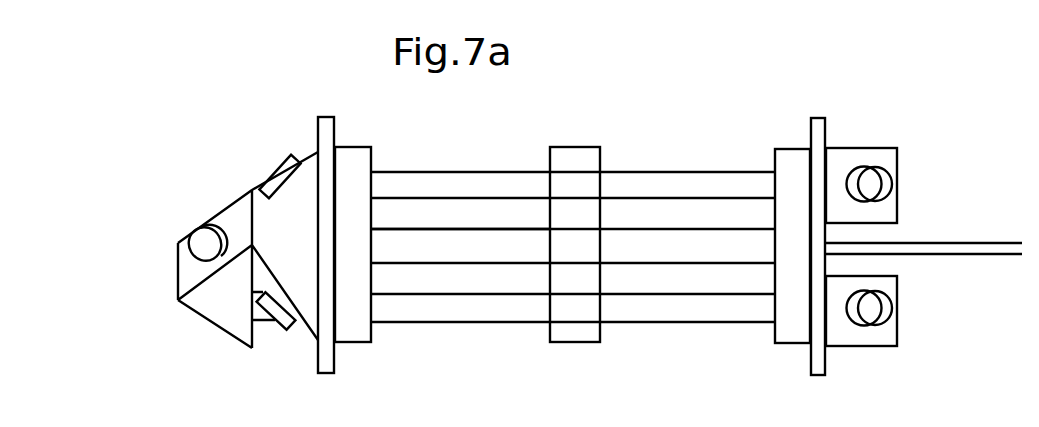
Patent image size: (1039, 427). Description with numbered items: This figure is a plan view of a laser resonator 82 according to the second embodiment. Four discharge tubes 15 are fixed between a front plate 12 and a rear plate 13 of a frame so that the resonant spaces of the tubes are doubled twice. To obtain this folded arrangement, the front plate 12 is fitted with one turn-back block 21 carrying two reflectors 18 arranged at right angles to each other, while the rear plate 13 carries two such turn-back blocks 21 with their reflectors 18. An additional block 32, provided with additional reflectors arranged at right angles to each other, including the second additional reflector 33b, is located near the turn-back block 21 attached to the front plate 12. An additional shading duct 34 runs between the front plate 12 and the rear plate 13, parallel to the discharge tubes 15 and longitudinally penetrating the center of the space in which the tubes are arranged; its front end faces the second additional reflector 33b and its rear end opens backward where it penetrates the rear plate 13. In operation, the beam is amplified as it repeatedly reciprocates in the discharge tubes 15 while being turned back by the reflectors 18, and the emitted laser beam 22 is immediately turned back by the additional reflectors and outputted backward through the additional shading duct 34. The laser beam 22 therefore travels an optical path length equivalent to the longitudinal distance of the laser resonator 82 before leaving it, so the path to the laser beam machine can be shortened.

The front plate 12 is at (327, 122).
The rear plate 13 is at (820, 123).
The discharge tube 15 is at (665, 185).
The reflector 18 is at (285, 172).
The turn-back block 21 is at (273, 215).
The laser beam 22 is at (962, 243).
The additional block 32 is at (198, 300).
The second additional reflector 33b is at (203, 232).
The additional shading duct 34 is at (470, 245).
The laser resonator 82 is at (615, 128).